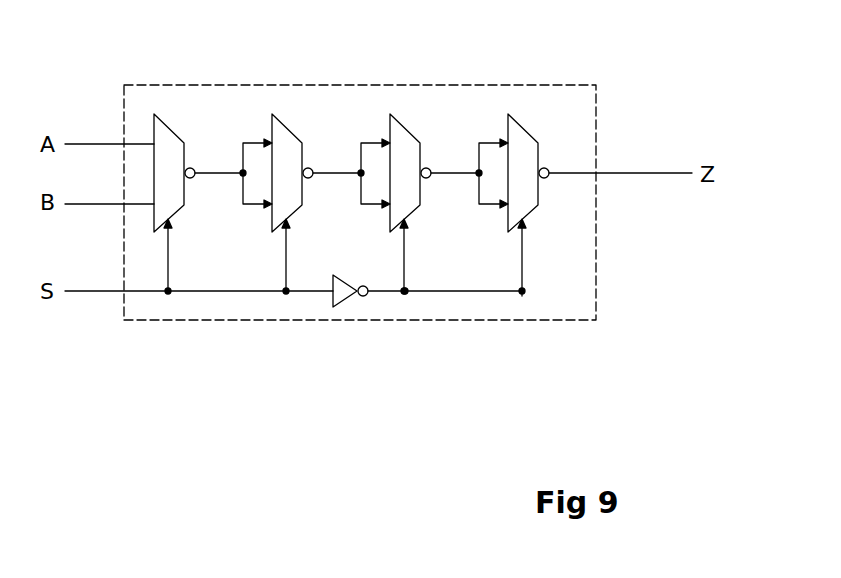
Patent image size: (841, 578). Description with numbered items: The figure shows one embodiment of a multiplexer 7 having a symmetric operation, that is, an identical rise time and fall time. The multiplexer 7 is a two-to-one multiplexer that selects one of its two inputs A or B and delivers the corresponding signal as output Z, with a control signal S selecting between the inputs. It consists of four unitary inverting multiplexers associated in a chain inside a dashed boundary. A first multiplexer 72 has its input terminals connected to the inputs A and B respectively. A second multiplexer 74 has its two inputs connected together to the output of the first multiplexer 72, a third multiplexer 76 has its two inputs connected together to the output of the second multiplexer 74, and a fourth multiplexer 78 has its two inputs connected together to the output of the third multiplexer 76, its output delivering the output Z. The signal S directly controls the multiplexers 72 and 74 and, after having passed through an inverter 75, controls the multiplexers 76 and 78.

The multiplexer 7 is at (470, 84).
The first multiplexer 72 is at (172, 128).
The second multiplexer 74 is at (290, 128).
The inverter 75 is at (348, 300).
The third multiplexer 76 is at (408, 128).
The fourth multiplexer 78 is at (526, 128).